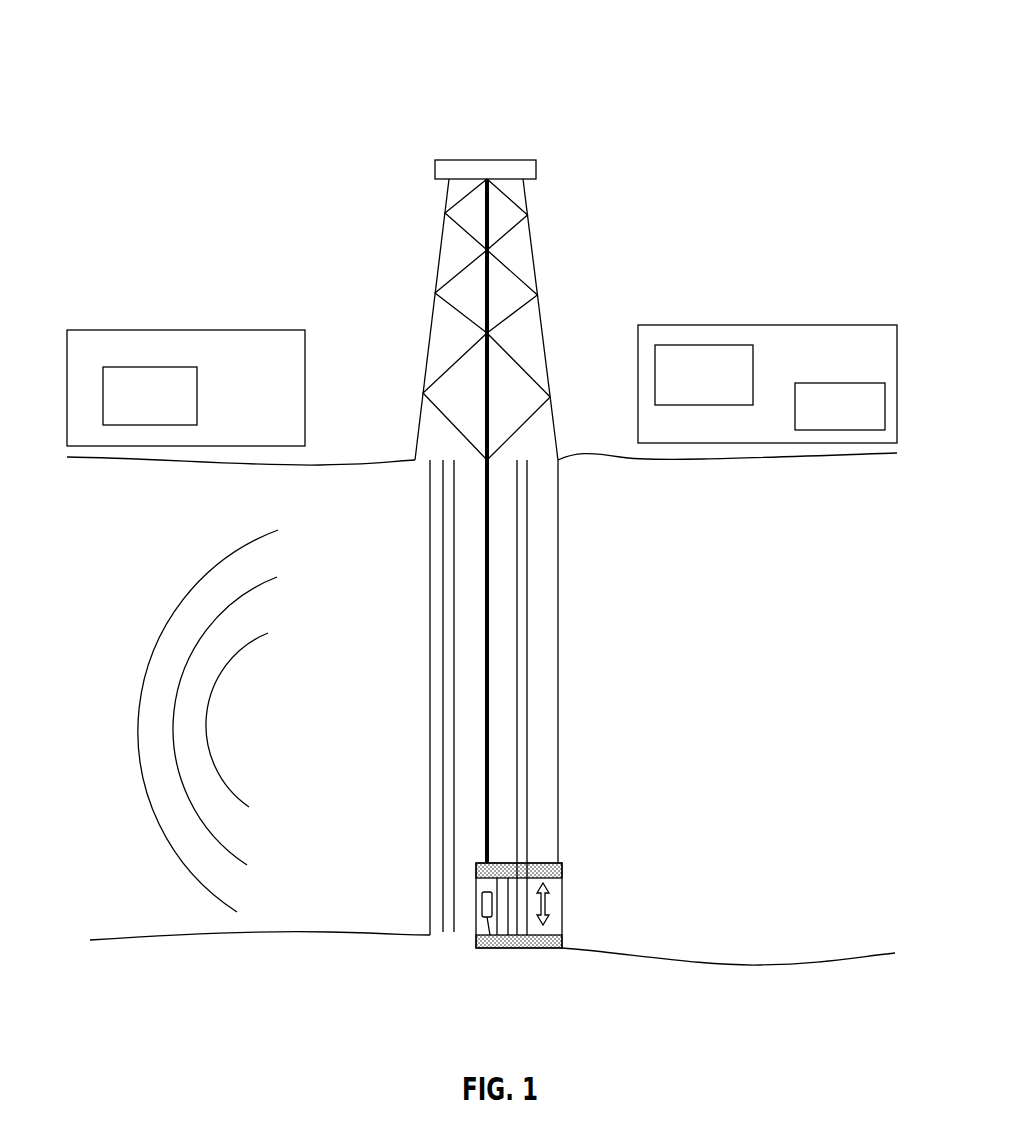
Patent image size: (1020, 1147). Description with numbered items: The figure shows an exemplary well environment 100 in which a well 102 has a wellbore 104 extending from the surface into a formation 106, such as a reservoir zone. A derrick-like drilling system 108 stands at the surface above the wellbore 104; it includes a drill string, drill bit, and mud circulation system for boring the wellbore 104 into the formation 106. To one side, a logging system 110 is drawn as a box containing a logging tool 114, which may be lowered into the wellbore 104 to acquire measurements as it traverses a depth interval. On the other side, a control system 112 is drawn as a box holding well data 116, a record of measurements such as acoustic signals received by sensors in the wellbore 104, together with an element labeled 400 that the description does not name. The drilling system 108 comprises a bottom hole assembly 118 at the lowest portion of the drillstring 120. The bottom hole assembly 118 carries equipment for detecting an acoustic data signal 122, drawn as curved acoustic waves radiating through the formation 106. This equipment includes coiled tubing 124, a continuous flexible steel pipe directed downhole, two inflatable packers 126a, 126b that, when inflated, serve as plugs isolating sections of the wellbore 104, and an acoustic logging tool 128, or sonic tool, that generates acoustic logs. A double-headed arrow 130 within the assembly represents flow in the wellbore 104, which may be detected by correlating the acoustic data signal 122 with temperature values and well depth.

The well environment 100 is at (720, 54).
The well 102 is at (533, 247).
The wellbore 104 is at (548, 686).
The formation 106 is at (700, 903).
The drilling system 108 is at (400, 342).
The logging system 110 is at (129, 328).
The control system 112 is at (830, 325).
The logging tool 114 is at (170, 410).
The well data 116 is at (725, 388).
The monitoring module / method 400 is at (860, 421).
The bottom hole assembly 118 is at (478, 933).
The drillstring 120 is at (489, 650).
The acoustic data signal 122 is at (136, 672).
The coiled tubing 124 is at (488, 893).
The inflatable packer 126a is at (562, 873).
The inflatable packer 126b is at (553, 943).
The acoustic logging tool 128 is at (477, 903).
The arrow 130 is at (550, 902).